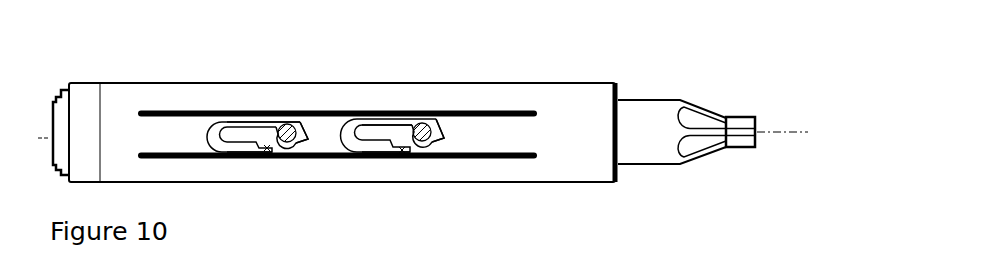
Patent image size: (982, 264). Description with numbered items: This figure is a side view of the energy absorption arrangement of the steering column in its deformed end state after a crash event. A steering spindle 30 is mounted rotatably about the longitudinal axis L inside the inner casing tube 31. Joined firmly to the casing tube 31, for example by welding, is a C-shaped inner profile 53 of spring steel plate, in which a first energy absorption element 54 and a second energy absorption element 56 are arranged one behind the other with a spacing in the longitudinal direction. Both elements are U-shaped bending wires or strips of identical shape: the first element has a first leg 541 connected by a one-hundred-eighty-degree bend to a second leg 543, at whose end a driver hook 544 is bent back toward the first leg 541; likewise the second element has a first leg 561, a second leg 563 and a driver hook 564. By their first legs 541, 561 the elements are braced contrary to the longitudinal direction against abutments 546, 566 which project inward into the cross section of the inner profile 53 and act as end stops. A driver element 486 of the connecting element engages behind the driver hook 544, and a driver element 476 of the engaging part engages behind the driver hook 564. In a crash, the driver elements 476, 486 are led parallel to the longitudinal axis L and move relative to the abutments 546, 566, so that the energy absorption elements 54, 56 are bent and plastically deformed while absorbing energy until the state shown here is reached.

The steering spindle 30 is at (650, 117).
The inner casing tube 31 is at (570, 97).
The inner profile 53 is at (478, 112).
The first energy absorption element 54 is at (209, 130).
The first leg 541 is at (237, 150).
The second leg 543 is at (243, 121).
The driver hook 544 is at (301, 121).
The abutment 546 is at (267, 153).
The driver element 486 is at (281, 126).
The second energy absorption element 56 is at (346, 119).
The first leg 561 is at (368, 147).
The second leg 563 is at (378, 121).
The driver hook 564 is at (434, 119).
The abutment 566 is at (402, 153).
The driver element 476 is at (421, 121).
The longitudinal axis L is at (778, 131).